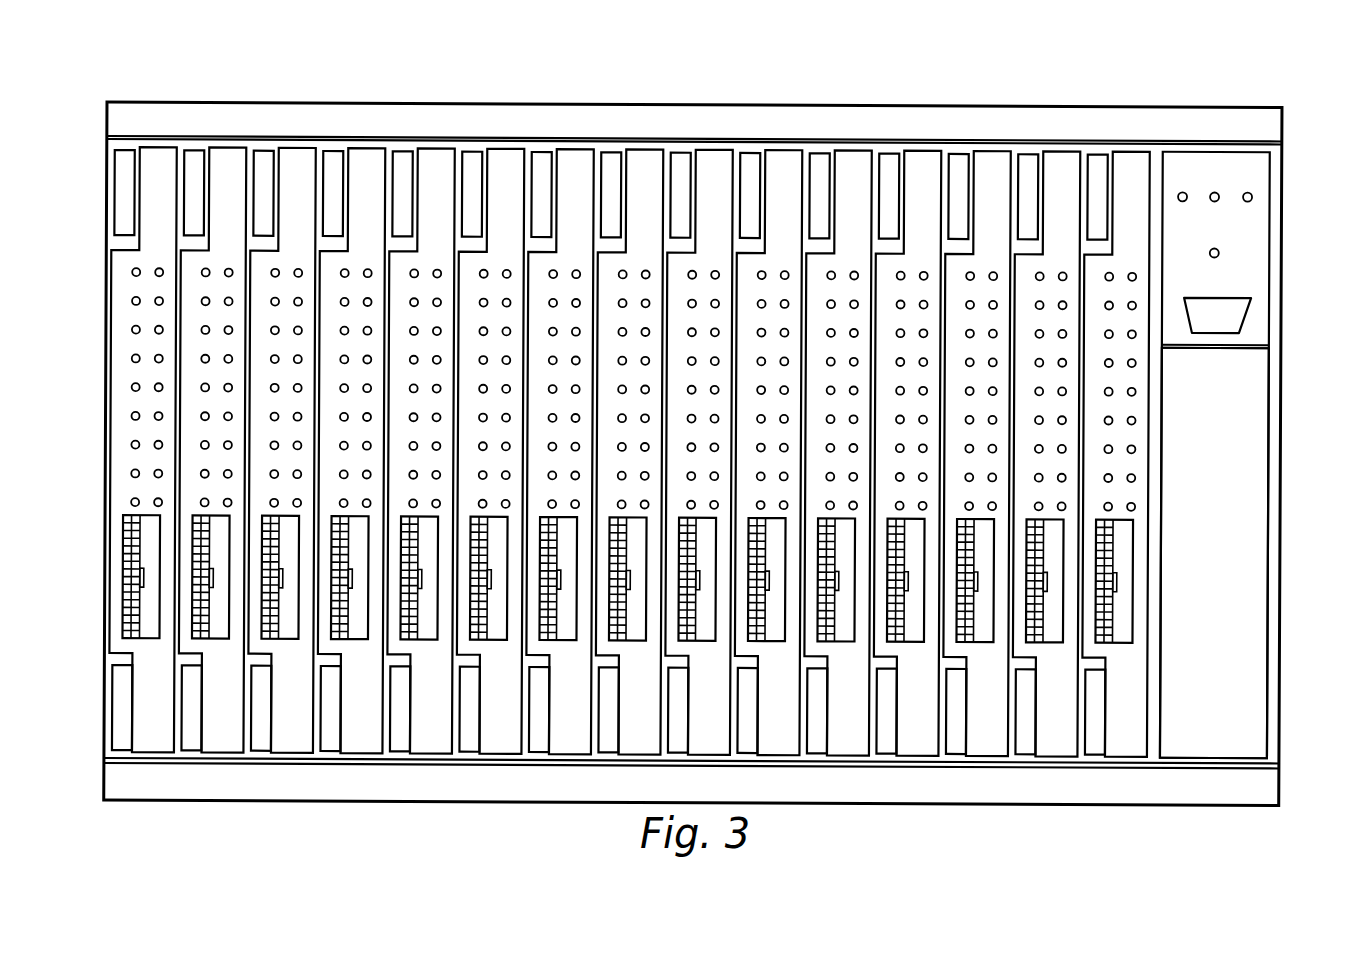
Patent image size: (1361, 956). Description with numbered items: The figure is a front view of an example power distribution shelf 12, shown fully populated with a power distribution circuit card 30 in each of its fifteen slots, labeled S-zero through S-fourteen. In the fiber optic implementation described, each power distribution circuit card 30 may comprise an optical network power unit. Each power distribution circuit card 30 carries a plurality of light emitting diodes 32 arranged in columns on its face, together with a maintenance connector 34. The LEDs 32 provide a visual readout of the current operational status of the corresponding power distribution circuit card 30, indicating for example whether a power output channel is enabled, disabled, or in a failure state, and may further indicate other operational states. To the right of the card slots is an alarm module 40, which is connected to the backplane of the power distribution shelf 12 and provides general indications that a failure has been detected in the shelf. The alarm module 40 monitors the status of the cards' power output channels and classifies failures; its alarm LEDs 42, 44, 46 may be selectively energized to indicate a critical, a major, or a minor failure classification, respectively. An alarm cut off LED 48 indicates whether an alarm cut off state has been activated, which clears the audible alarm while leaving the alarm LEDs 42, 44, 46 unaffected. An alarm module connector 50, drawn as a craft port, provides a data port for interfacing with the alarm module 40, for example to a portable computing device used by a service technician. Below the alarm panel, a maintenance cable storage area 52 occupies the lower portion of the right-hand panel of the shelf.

The power distribution shelf 12 is at (843, 77).
The power distribution circuit card 30 is at (166, 156).
The light emitting diodes 32 is at (98, 369).
The maintenance connector 34 is at (125, 591).
The alarm module 40 is at (1231, 455).
The LED 42 is at (1182, 202).
The LED 44 is at (1216, 201).
The LED 46 is at (1253, 197).
The alarm cut off LED 48 is at (1220, 253).
The alarm module connector 50 is at (1252, 318).
The maintenance cable storage area 52 is at (1271, 565).